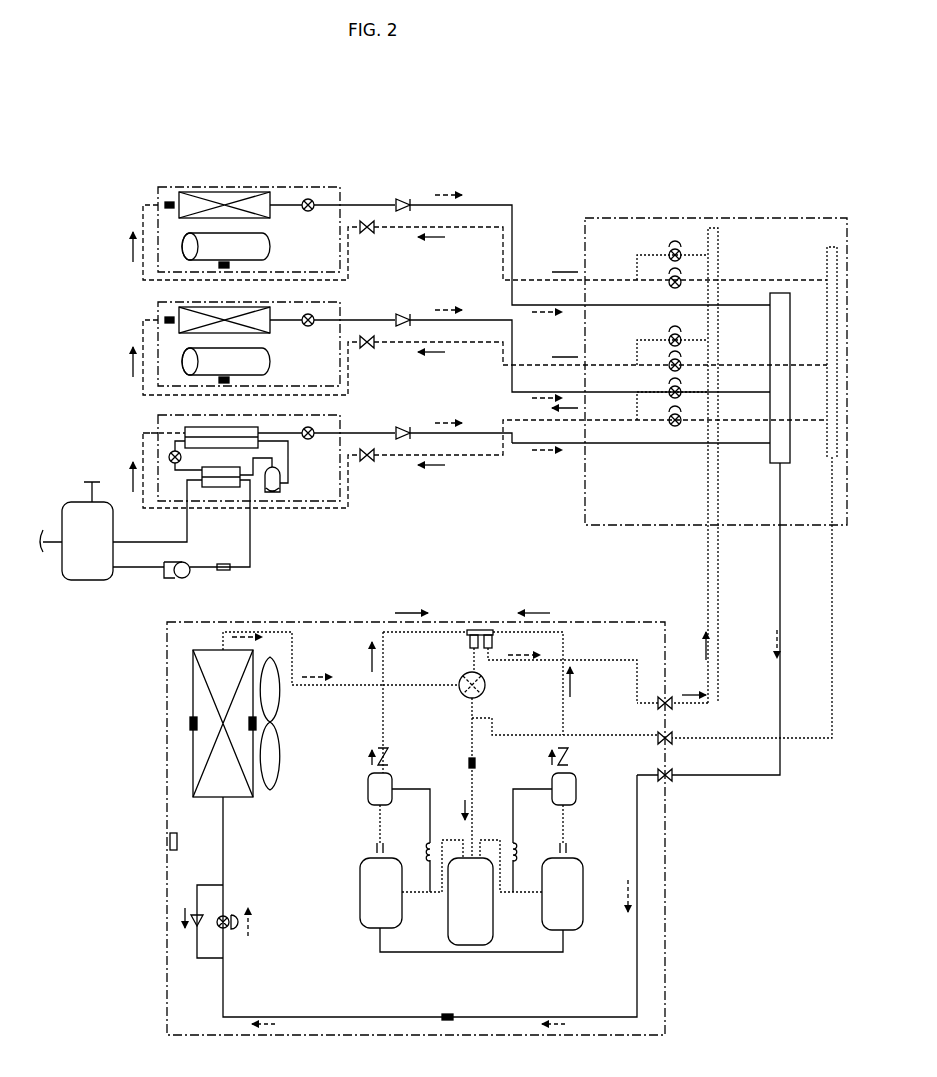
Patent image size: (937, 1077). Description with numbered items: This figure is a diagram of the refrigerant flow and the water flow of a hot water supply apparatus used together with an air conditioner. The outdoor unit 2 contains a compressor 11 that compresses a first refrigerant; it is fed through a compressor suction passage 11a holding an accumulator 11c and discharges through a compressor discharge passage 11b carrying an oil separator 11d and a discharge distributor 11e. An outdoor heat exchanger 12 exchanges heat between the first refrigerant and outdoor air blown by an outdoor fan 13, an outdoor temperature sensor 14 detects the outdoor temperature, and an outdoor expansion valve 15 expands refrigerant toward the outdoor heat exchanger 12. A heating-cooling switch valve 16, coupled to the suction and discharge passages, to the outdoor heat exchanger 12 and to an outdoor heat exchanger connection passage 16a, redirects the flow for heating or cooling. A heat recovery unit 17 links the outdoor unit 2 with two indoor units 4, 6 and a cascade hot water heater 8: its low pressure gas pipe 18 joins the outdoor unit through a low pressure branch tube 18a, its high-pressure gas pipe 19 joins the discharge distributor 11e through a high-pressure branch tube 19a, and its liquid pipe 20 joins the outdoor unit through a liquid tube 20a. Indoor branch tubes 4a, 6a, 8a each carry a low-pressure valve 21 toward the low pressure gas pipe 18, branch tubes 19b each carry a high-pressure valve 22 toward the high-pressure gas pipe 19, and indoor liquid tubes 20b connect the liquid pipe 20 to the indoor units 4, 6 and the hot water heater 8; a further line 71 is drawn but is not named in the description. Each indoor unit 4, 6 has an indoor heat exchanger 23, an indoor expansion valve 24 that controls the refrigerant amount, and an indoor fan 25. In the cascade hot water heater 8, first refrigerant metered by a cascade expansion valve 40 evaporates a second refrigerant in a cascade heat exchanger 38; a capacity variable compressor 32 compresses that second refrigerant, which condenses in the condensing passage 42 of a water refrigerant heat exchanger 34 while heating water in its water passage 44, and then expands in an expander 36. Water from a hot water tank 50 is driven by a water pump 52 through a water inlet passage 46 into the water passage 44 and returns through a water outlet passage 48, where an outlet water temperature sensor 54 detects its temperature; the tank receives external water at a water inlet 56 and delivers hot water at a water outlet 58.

The outdoor unit 2 is at (164, 652).
The indoor unit 4 is at (152, 200).
The indoor branch tube 4a is at (432, 228).
The indoor unit 6 is at (152, 315).
The indoor branch tube 6a is at (432, 343).
The cascade hot water heater 8 is at (152, 430).
The indoor branch tube 8a is at (430, 456).
The compressor 11 is at (362, 912).
The compressor suction passage 11a is at (462, 838).
The compressor discharge passage 11b is at (385, 725).
The accumulator 11c is at (493, 930).
The oil separator 11d is at (368, 788).
The discharge distributor 11e is at (480, 630).
The outdoor heat exchanger 12 is at (240, 797).
The outdoor fan 13 is at (270, 790).
The outdoor temperature sensor 14 is at (170, 850).
The outdoor expansion valve 15 is at (230, 918).
The heating-cooling switch valve 16 is at (462, 696).
The outdoor heat exchanger connection passage 16a is at (325, 686).
The heat recovery unit 17 is at (600, 540).
The low pressure gas pipe 18 is at (832, 250).
The low pressure branch tube 18a is at (725, 742).
The high-pressure gas pipe 19 is at (716, 228).
The high-pressure branch tube 19a is at (687, 708).
The branch tube 19b is at (637, 262).
The liquid pipe 20 is at (786, 293).
The liquid tube 20a is at (745, 777).
The indoor liquid tube 20b is at (488, 205).
The low-pressure valve 21 is at (650, 253).
The high-pressure valve 22 is at (672, 240).
The indoor heat exchanger 23 is at (230, 192).
The indoor expansion valve 24 is at (312, 199).
The indoor fan 25 is at (203, 240).
The capacity variable compressor 32 is at (275, 488).
The water refrigerant heat exchanger 34 is at (202, 477).
The expander 36 is at (170, 454).
The cascade heat exchanger 38 is at (200, 427).
The cascade expansion valve 40 is at (315, 432).
The condensing passage 42 is at (216, 487).
The water passage 44 is at (232, 487).
The water inlet passage 46 is at (132, 540).
The water outlet passage 48 is at (206, 568).
The hot water tank 50 is at (90, 580).
The water pump 52 is at (176, 577).
The outlet water temperature sensor 54 is at (228, 570).
The water inlet 56 is at (82, 488).
The water outlet 58 is at (50, 546).
The liquid connection pipe 71 is at (614, 444).